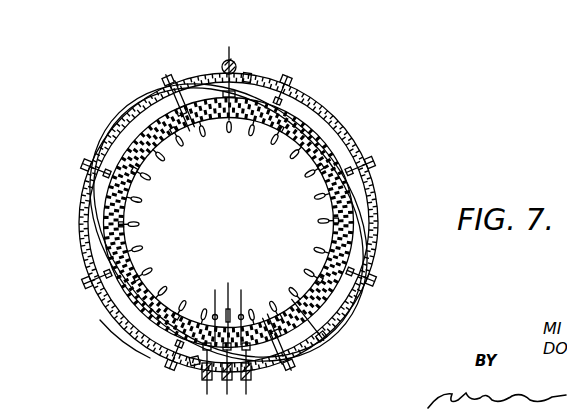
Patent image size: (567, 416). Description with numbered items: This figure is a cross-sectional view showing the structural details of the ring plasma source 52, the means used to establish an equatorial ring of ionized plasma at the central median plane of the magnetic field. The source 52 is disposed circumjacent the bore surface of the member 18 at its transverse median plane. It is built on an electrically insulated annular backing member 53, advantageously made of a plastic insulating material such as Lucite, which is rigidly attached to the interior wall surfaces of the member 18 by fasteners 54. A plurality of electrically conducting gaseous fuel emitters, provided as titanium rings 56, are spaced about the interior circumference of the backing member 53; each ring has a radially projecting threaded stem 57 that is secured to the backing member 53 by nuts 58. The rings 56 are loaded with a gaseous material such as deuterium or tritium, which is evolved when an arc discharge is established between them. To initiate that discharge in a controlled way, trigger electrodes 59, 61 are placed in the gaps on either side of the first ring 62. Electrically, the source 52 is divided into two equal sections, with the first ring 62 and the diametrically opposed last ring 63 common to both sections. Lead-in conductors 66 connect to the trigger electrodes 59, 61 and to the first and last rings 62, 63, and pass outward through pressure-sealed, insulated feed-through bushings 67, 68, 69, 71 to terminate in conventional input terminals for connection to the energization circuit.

The member 18 is at (332, 113).
The ring plasma source 52 is at (100, 241).
The annular backing member 53 is at (120, 331).
The fasteners 54 is at (88, 160).
The titanium rings 56 is at (145, 196).
The threaded stem 57 is at (165, 103).
The nuts 58 is at (366, 205).
The trigger electrode 59 is at (215, 300).
The trigger electrode 61 is at (241, 300).
The first ring 62 is at (228, 290).
The last ring 63 is at (231, 134).
The lead-in conductors 66 is at (248, 74).
The feed-through bushing 67 is at (206, 382).
The feed-through bushing 68 is at (252, 378).
The feed-through bushing 69 is at (228, 382).
The feed-through bushing 71 is at (222, 66).